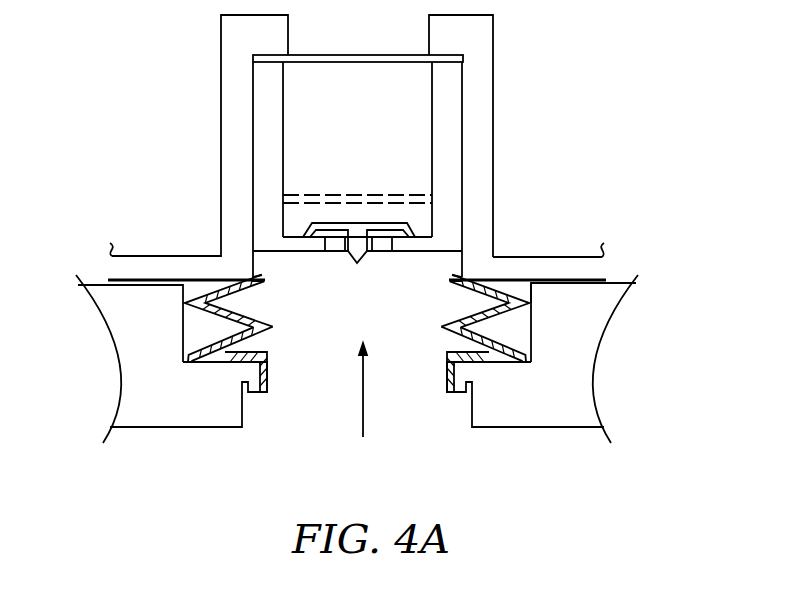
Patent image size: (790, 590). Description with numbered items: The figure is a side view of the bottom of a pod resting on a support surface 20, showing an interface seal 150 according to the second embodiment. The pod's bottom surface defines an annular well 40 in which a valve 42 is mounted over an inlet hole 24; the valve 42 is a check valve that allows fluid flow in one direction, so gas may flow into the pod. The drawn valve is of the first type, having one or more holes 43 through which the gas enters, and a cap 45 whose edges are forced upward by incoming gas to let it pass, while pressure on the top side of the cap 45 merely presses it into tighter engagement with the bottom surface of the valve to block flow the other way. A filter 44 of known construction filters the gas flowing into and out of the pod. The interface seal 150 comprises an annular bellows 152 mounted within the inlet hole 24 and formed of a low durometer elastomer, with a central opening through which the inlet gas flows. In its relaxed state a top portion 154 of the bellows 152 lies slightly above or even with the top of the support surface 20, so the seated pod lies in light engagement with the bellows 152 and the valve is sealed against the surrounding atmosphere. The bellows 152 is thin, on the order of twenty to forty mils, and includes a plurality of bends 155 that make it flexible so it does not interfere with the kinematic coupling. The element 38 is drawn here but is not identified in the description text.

The support surface 20 is at (140, 404).
The inlet hole 24 is at (336, 413).
The flange 38 is at (175, 268).
The annular well 40 is at (405, 149).
The valve 42 is at (400, 223).
The holes 43 is at (335, 247).
The filter 44 is at (347, 54).
The cap 45 is at (303, 232).
The interface seal 150 is at (432, 346).
The annular bellows 152 is at (531, 303).
The top portion 154 is at (265, 280).
The bends 155 is at (197, 306).